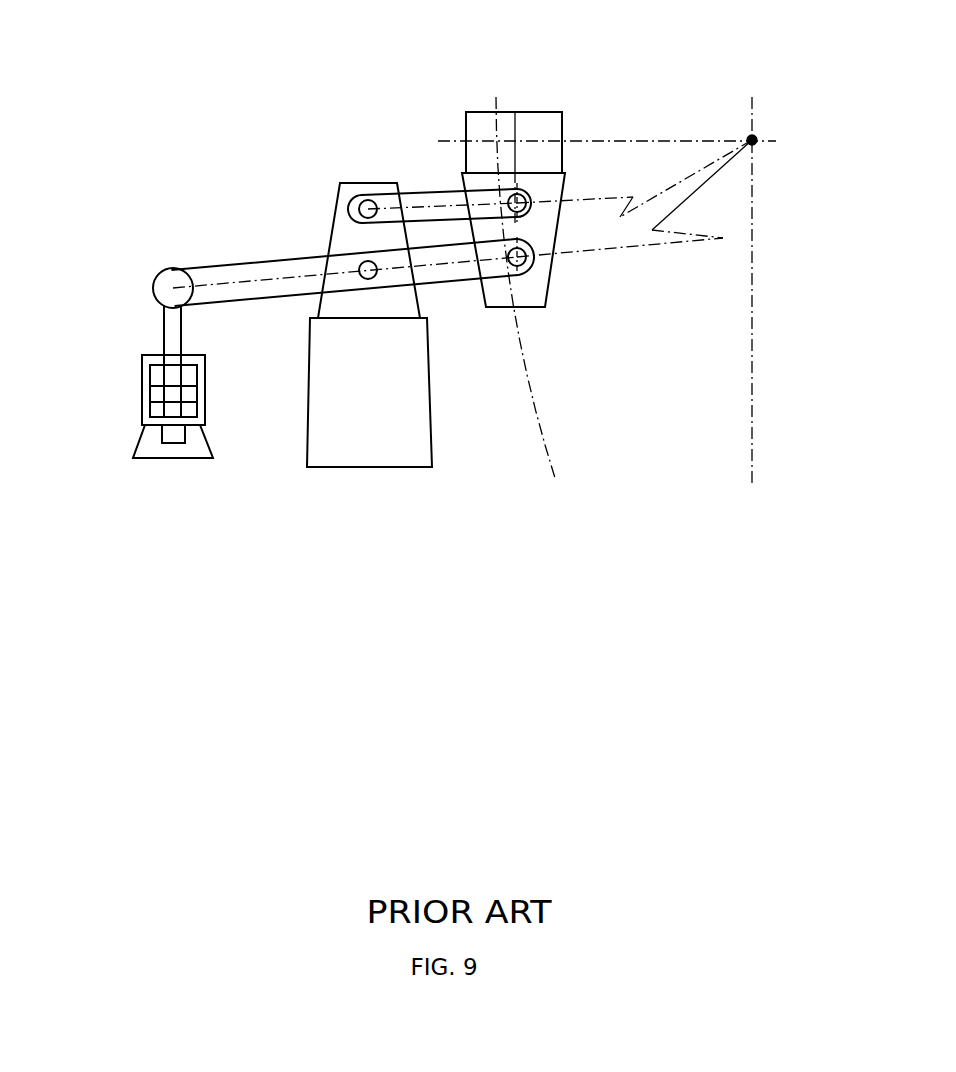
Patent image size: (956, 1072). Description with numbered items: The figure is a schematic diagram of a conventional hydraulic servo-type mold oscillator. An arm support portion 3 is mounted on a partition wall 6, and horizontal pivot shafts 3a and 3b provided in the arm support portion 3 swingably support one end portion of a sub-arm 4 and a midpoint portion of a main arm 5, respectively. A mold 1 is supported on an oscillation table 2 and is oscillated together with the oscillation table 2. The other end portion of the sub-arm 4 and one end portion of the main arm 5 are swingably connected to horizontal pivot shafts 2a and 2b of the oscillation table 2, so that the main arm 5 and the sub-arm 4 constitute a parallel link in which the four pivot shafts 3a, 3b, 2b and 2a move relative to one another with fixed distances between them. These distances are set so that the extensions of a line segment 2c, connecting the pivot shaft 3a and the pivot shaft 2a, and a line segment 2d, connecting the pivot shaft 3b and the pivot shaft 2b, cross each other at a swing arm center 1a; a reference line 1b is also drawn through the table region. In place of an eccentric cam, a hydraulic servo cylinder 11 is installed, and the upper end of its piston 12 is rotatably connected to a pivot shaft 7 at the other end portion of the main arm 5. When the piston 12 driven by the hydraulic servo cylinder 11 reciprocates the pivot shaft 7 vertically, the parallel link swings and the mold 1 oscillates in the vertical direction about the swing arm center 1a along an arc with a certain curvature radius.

The mold 1 is at (521, 130).
The swing arm center 1a is at (756, 136).
The vertical reference line 1b is at (528, 355).
The oscillation table 2 is at (543, 231).
The pivot shaft 2a is at (525, 196).
The pivot shaft 2b is at (530, 265).
The line segment 2c is at (700, 168).
The line segment 2d is at (705, 182).
The arm support portion 3 is at (342, 240).
The pivot shaft 3a is at (364, 198).
The pivot shaft 3b is at (378, 275).
The sub-arm 4 is at (431, 205).
The main arm 5 is at (255, 292).
The partition wall 6 is at (400, 410).
The pivot shaft 7 is at (163, 295).
The hydraulic servo cylinder 11 is at (150, 387).
The piston 12 is at (173, 332).